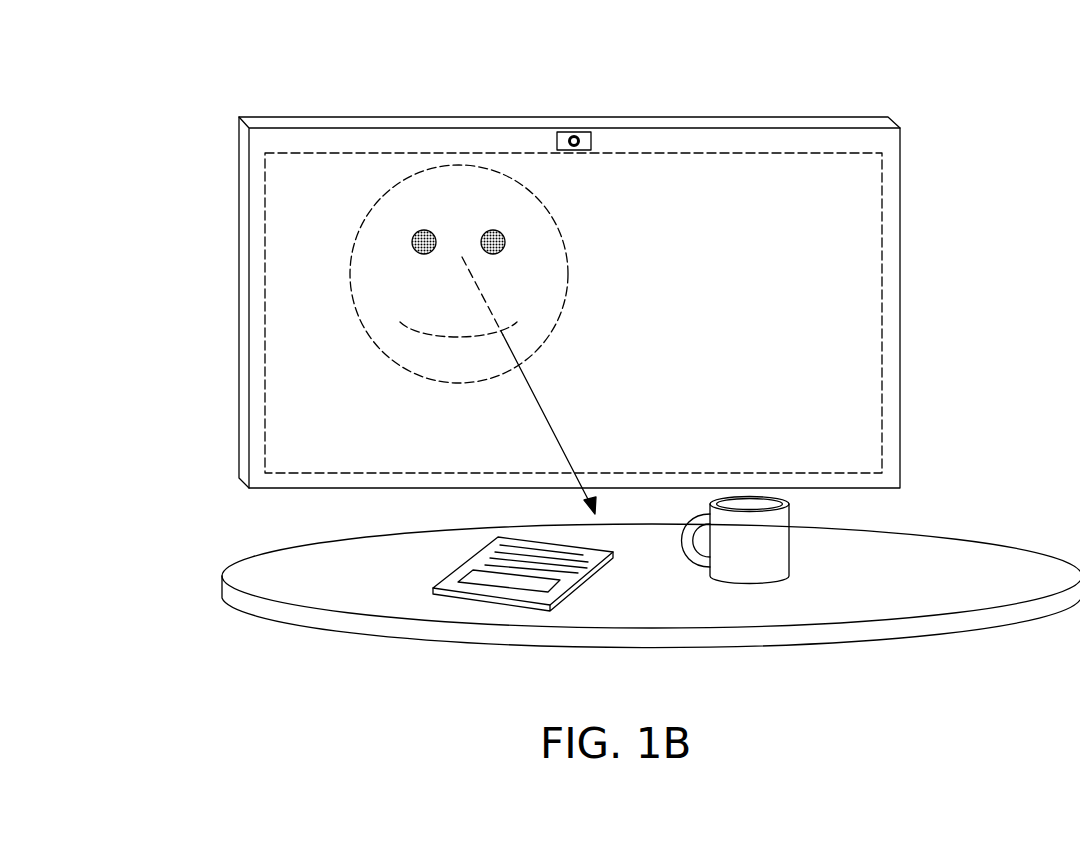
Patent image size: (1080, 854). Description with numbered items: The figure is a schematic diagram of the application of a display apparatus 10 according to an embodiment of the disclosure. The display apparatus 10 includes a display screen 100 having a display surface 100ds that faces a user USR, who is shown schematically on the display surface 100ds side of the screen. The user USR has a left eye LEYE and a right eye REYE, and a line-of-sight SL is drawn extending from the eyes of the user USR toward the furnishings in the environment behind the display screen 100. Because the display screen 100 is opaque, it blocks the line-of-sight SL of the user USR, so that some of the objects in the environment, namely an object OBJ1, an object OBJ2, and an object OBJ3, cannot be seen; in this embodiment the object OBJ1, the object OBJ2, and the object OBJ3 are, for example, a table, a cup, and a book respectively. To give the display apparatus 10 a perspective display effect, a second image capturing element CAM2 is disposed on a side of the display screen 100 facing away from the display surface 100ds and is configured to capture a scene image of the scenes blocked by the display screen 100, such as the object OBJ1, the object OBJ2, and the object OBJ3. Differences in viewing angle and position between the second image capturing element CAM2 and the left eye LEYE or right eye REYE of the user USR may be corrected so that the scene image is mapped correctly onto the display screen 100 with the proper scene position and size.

The display apparatus 10 is at (918, 115).
The display screen 100 is at (283, 120).
The display surface 100ds is at (742, 153).
The second image capturing element CAM2 is at (568, 133).
The user USR is at (430, 167).
The right eye REYE is at (412, 242).
The left eye LEYE is at (505, 242).
The line-of-sight SL is at (563, 443).
The object OBJ1 is at (247, 576).
The object OBJ2 is at (775, 558).
The object OBJ3 is at (460, 578).